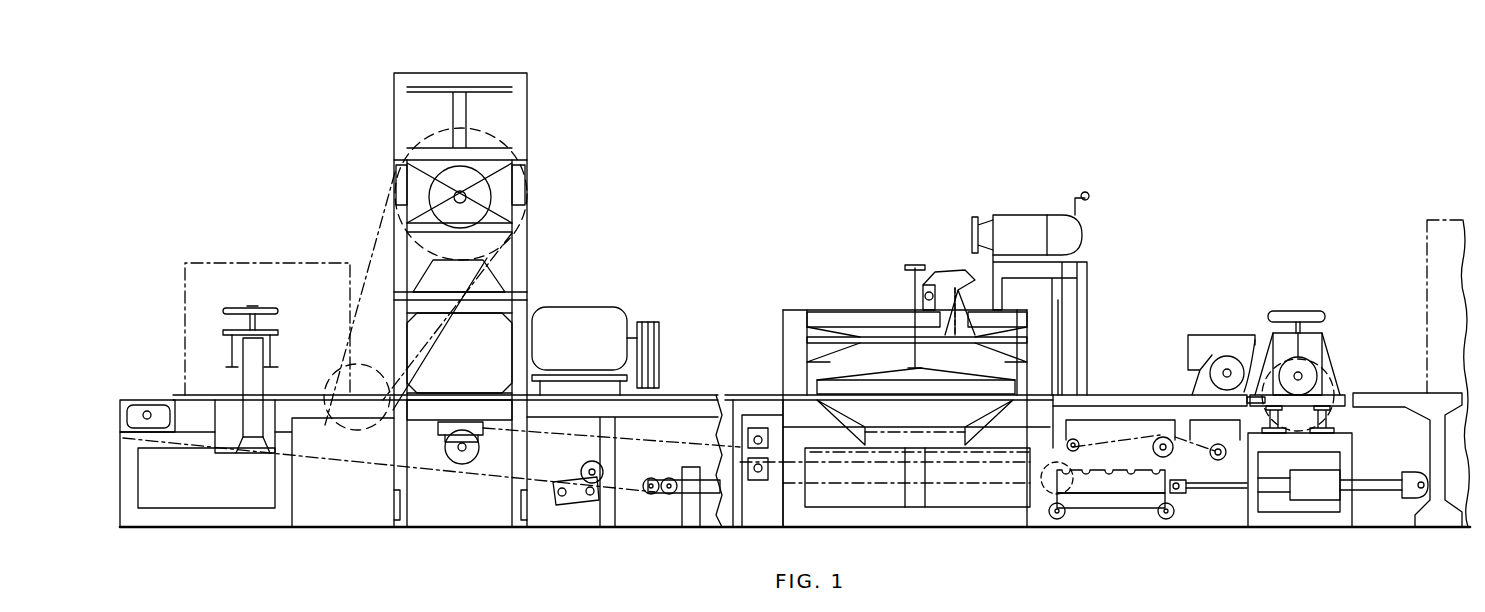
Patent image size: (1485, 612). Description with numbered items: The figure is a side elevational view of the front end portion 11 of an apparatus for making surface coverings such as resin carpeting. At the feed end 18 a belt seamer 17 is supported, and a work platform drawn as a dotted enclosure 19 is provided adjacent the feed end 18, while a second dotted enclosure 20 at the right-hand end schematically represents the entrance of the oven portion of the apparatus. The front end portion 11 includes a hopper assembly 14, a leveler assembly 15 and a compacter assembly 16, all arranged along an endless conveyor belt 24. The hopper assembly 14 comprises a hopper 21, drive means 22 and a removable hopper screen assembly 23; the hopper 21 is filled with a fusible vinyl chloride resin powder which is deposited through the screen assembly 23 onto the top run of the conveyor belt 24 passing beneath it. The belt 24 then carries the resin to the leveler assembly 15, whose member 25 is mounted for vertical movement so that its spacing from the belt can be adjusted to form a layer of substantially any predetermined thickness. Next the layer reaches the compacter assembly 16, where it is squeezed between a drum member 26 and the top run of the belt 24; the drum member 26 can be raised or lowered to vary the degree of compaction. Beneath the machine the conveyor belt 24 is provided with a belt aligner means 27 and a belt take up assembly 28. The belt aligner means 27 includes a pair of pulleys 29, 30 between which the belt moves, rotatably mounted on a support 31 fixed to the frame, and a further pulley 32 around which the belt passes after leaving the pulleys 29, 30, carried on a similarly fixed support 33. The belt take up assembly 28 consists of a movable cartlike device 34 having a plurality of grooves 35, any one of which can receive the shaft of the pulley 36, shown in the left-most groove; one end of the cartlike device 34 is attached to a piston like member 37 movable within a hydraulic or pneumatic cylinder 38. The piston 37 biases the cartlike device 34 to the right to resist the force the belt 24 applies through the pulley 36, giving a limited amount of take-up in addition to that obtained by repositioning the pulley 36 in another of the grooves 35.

The front end portion 11 is at (980, 530).
The hopper assembly 14 is at (431, 300).
The leveler assembly 15 is at (936, 359).
The compacter assembly 16 is at (1285, 362).
The belt seamer 17 is at (268, 354).
The feed end 18 is at (175, 394).
The dotted enclosure 19 is at (250, 261).
The dotted enclosure 20 is at (1435, 216).
The hopper 21 is at (528, 115).
The drive means 22 is at (450, 334).
The removable hopper screen assembly 23 is at (438, 234).
The endless conveyor belt 24 is at (458, 392).
The member 25 is at (945, 375).
The drum member 26 is at (1313, 372).
The belt aligner means 27 is at (579, 508).
The belt take up assembly 28 is at (1124, 520).
The pulley 29 is at (649, 477).
The pulley 30 is at (669, 477).
The support 31 is at (692, 520).
The pulley 32 is at (588, 464).
The support 33 is at (573, 478).
The cartlike device 34 is at (1102, 505).
The grooves 35 is at (1108, 469).
The pulley 36 is at (1055, 467).
The piston like member 37 is at (1226, 500).
The cylinder 38 is at (1380, 488).